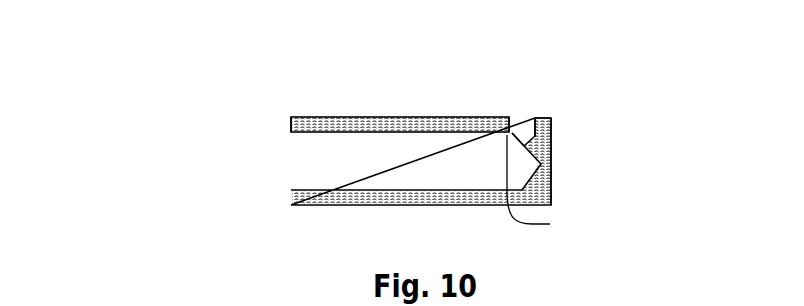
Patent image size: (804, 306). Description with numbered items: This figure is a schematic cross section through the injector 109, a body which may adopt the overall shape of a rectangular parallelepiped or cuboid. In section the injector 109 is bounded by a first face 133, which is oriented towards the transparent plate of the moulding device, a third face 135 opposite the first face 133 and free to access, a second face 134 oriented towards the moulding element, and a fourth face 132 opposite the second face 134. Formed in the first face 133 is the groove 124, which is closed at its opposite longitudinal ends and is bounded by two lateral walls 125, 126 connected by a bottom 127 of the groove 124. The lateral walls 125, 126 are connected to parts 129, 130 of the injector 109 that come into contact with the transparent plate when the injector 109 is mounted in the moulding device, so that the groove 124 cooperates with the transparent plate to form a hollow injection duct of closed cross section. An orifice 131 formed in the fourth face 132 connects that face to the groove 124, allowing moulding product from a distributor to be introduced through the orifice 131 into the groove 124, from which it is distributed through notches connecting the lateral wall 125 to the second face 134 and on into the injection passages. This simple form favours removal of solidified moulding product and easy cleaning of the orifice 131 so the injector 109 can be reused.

The injector 109 is at (292, 102).
The first face 133 is at (397, 109).
The third face 135 is at (325, 210).
The orifice 131 is at (335, 155).
The fourth face 132 is at (286, 124).
The groove 124 is at (517, 111).
The part of the injector 130 is at (507, 135).
The lateral wall 126 is at (553, 219).
The bottom of the groove 127 is at (526, 118).
The lateral wall 125 is at (528, 122).
The part of the injector 129 is at (538, 119).
The second face 134 is at (552, 175).